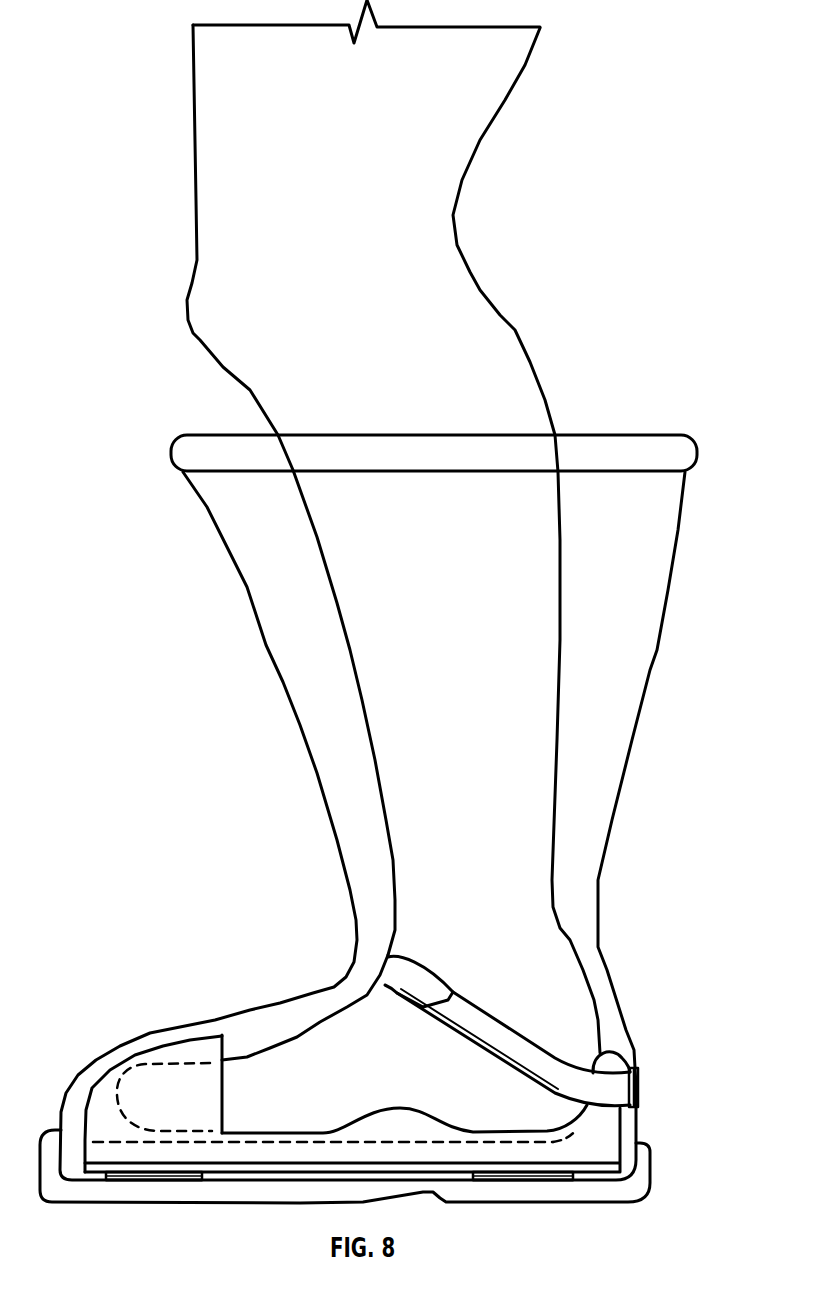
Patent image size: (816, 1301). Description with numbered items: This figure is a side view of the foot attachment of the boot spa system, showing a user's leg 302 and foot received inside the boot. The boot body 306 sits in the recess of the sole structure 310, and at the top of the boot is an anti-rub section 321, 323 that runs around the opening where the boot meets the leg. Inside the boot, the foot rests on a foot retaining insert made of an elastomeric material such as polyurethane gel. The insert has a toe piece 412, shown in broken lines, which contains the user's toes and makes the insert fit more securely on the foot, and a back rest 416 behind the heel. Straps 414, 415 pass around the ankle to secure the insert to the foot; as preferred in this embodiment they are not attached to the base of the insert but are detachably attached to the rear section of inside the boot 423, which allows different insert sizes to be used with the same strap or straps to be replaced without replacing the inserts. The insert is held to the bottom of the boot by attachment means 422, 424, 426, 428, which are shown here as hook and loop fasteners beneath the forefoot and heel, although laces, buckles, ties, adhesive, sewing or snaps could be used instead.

The leg 302 is at (480, 310).
The boot body 306 is at (278, 680).
The anti-rub section 321 is at (655, 450).
The band 323 is at (443, 402).
The sole structure 310 is at (640, 1167).
The toe piece 412 is at (187, 1053).
The strap 414 is at (490, 1040).
The strap 415 is at (397, 972).
The back rest 416 is at (610, 1063).
The rear section of inside the boot 423 is at (640, 1092).
The forefoot traction element 422 is at (165, 1177).
The attachment means 424 is at (115, 1182).
The attachment means 426 is at (543, 1177).
The attachment means 428 is at (492, 1177).